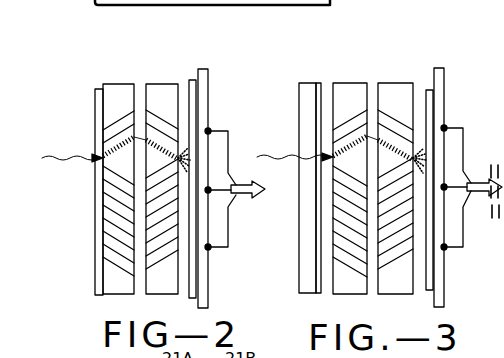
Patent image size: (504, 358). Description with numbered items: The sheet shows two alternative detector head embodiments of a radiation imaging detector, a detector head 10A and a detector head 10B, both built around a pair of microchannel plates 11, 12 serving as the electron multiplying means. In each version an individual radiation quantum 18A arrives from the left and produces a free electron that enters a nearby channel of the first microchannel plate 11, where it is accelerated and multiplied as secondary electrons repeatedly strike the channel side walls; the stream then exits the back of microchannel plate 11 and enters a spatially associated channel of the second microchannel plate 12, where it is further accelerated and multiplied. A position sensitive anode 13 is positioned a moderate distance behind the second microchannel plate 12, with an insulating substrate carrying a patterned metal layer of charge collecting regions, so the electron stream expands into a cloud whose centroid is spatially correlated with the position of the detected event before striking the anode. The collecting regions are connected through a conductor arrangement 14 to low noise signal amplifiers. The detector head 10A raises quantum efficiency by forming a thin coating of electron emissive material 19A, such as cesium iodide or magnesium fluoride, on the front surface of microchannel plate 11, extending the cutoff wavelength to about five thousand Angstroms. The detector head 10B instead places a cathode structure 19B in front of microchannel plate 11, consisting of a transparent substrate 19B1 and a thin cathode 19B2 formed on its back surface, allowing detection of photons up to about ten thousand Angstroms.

In FIG. 2, the detector head 10A is at (161, 170).
In FIG. 3, the detector head 10B is at (373, 170).
In FIG. 2, the microchannel plate 11 is at (120, 90).
In FIG. 3, the microchannel plate 11 is at (351, 90).
In FIG. 2, the microchannel plate 12 is at (160, 90).
In FIG. 3, the microchannel plate 12 is at (393, 90).
In FIG. 2, the position sensitive anode 13 is at (214, 104).
In FIG. 3, the position sensitive anode 13 is at (452, 92).
In FIG. 2, the conductor arrangement 14 is at (242, 176).
In FIG. 3, the conductor arrangement 14 is at (480, 171).
In FIG. 2, the radiation quantum 18A is at (84, 153).
In FIG. 3, the radiation quantum 18A is at (289, 153).
In FIG. 2, the electron emissive material coating 19A is at (90, 113).
In FIG. 3, the cathode structure 19B is at (281, 188).
In FIG. 3, the transparent substrate 19B1 is at (312, 225).
In FIG. 3, the cathode 19B2 is at (320, 245).